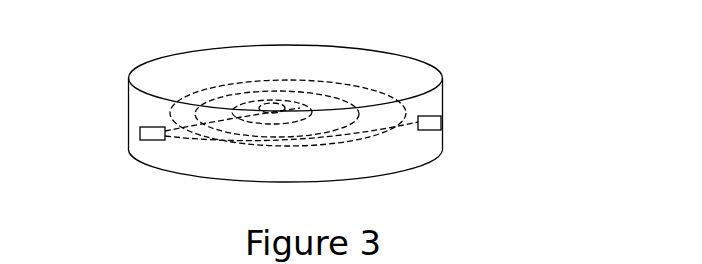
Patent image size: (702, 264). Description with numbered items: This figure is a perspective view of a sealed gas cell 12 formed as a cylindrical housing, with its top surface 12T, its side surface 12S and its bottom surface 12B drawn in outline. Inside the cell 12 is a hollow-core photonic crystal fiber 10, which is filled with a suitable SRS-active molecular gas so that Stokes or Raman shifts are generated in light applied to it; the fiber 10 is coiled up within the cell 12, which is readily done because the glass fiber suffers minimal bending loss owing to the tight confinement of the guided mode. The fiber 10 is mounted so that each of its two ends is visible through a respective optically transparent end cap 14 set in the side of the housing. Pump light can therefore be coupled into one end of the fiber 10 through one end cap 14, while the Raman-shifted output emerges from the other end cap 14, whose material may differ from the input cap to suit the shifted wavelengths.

The hollow-core photonic crystal fiber 10 is at (453, 143).
The sealed gas cell 12 is at (286, 109).
The top surface of housing 12T is at (425, 64).
The side surface of housing 12S is at (444, 108).
The bottom surface of housing 12B is at (415, 160).
The transparent end cap 14 is at (140, 132).